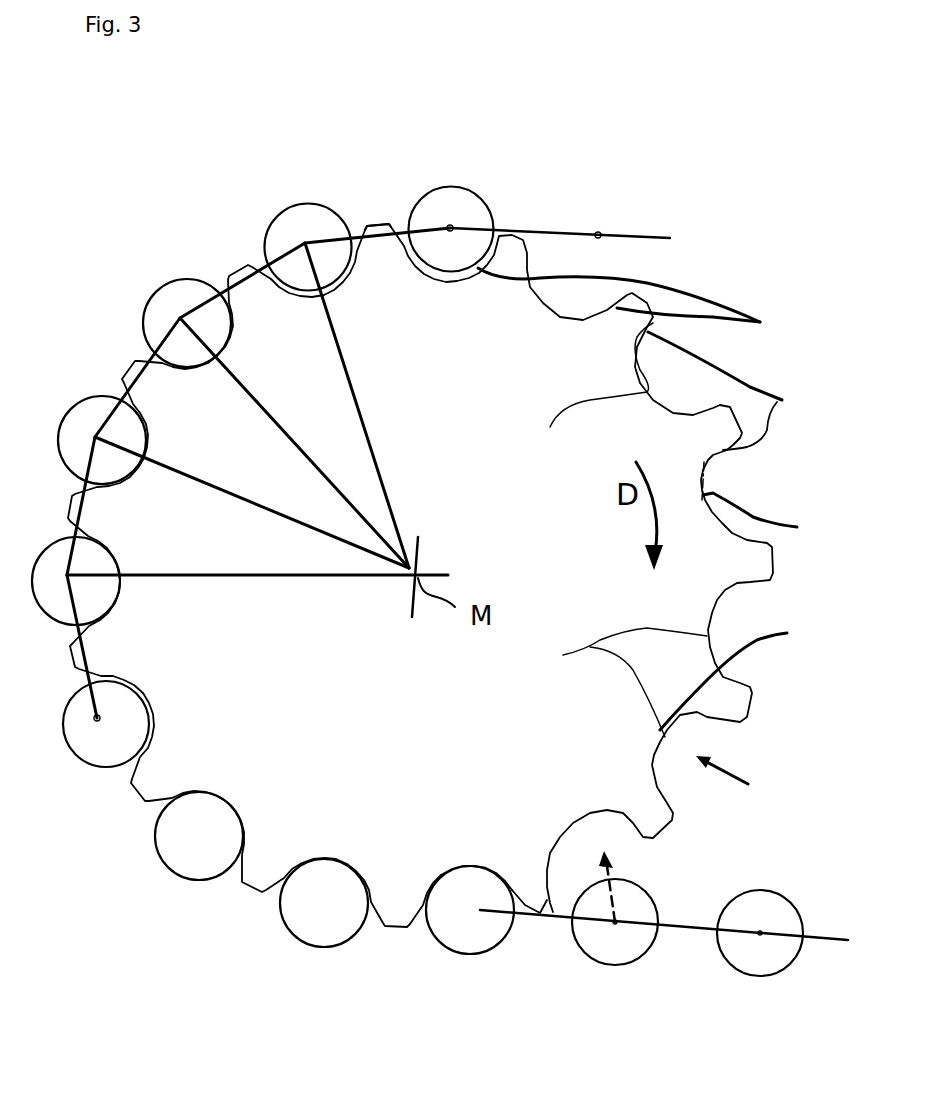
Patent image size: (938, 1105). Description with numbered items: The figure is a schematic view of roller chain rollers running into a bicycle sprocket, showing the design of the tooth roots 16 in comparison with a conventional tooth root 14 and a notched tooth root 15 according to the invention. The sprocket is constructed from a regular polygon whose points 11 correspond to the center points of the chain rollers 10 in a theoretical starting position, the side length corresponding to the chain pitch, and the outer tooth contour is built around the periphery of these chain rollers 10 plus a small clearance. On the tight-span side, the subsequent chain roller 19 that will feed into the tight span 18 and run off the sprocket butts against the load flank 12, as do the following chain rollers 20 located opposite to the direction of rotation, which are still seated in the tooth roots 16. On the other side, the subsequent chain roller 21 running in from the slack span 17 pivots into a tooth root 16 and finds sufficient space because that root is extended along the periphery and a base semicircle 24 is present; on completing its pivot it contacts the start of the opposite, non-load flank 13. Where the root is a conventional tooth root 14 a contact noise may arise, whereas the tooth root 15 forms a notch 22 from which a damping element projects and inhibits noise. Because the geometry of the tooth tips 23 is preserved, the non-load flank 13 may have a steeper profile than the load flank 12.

The chain rollers 10 is at (48, 540).
The points of the polygon 11 is at (95, 437).
The load flank 12 is at (645, 310).
The opposite flank 13 is at (739, 376).
The conventional tooth root 14 is at (710, 468).
The tooth root 15 is at (773, 521).
The tooth roots 16 is at (748, 780).
The slack span 17 is at (822, 935).
The tight span 18 is at (650, 238).
The subsequent chain roller 19 is at (487, 206).
The following chain rollers 20 is at (265, 228).
The subsequent chain roller running in 21 is at (648, 883).
The notch 22 is at (715, 610).
The tooth tips 23 is at (370, 227).
The base semicircle 24 is at (613, 530).